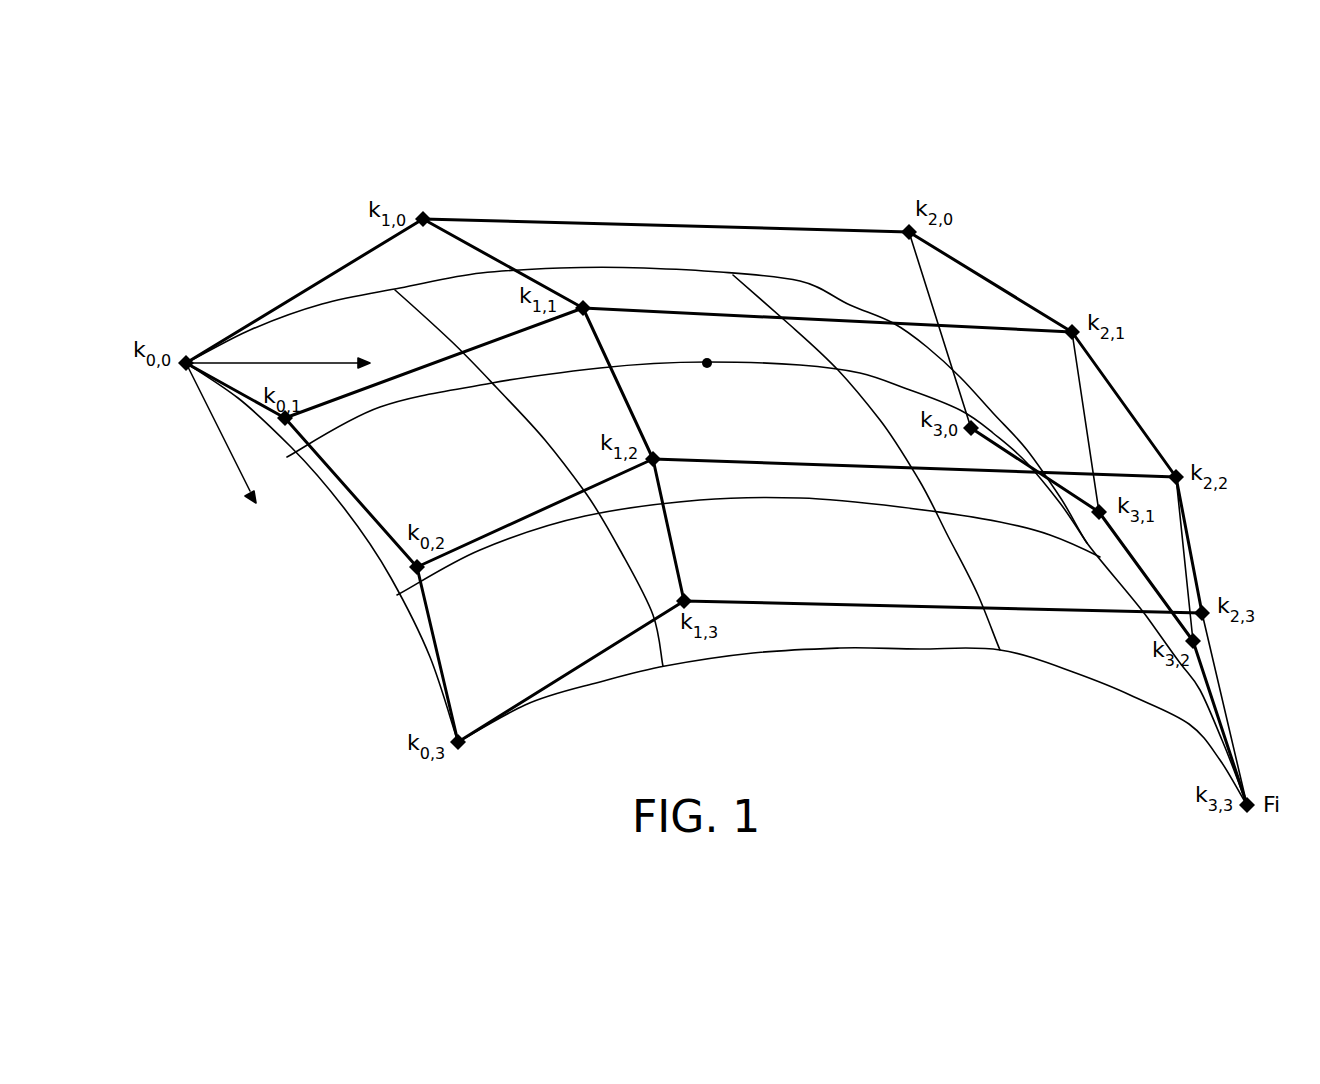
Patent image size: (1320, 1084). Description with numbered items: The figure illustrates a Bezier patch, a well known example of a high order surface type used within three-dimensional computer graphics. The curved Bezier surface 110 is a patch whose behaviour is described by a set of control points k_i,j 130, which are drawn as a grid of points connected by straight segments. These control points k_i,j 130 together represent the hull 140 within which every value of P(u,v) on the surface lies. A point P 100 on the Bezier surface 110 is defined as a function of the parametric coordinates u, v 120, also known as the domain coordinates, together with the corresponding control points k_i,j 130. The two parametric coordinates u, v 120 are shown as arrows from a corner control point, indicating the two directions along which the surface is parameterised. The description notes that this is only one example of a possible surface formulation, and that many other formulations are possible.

The point P 100 is at (707, 372).
The Bezier surface 110 is at (872, 650).
The parametric coordinates u, v 120 is at (360, 362).
The control points k_i,j 130 is at (180, 372).
The hull 140 is at (648, 227).